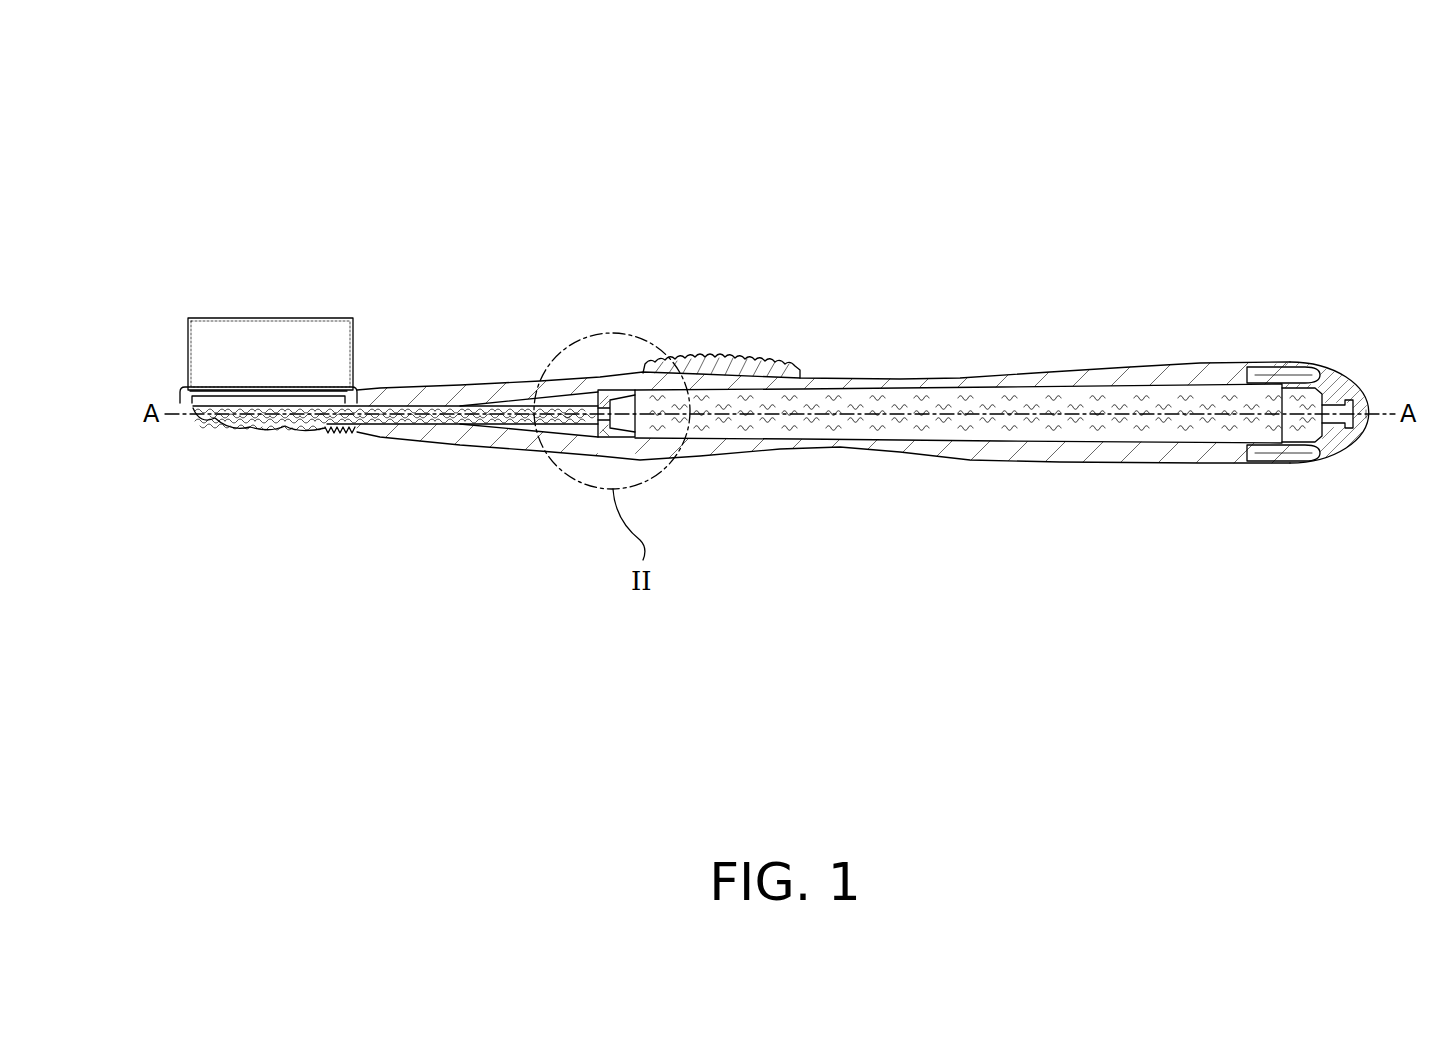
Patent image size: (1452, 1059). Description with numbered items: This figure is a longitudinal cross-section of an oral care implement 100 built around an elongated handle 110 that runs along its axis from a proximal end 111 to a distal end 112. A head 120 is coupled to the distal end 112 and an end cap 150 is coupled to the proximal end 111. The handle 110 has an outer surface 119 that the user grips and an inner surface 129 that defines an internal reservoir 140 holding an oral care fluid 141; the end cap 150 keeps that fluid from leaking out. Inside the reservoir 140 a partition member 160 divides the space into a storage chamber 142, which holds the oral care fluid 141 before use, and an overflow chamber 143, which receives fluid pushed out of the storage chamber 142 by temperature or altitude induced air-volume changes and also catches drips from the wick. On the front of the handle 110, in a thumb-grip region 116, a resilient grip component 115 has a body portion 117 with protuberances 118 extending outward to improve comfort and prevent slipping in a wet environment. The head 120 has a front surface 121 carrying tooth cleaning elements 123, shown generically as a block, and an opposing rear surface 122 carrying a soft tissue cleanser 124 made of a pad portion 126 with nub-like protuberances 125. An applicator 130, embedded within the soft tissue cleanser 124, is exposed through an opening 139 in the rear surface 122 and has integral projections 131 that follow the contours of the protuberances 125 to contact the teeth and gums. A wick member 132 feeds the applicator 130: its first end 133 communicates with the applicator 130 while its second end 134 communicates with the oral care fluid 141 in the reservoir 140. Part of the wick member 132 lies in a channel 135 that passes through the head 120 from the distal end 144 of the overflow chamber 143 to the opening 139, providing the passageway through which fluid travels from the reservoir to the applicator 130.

The oral care implement 100 is at (294, 163).
The handle 110 is at (1104, 453).
The proximal end 111 is at (1369, 417).
The distal end 112 is at (460, 404).
The grip component 115 is at (780, 359).
The thumb-grip region 116 is at (816, 347).
The body portion 117 is at (744, 359).
The protuberances 118 is at (712, 357).
The outer surface 119 is at (1202, 362).
The head 120 is at (203, 387).
The front surface 121 is at (300, 385).
The rear surface 122 is at (315, 410).
The tooth cleaning elements 123 is at (257, 348).
The soft tissue cleanser 124 is at (350, 429).
The protuberances 125 is at (337, 433).
The pad portion 126 is at (365, 436).
The inner surface 129 is at (1227, 388).
The applicator 130 is at (237, 427).
The projections 131 is at (271, 427).
The wick member 132 is at (423, 393).
The first end 133 is at (338, 402).
The second end 134 is at (628, 437).
The channel 135 is at (442, 420).
The opening 139 is at (183, 402).
The internal reservoir 140 is at (1262, 401).
The oral care fluid 141 is at (1236, 428).
The storage chamber 142 is at (1170, 445).
The overflow chamber 143 is at (579, 384).
The distal end 144 is at (466, 427).
The end cap 150 is at (1345, 385).
The partition member 160 is at (612, 398).